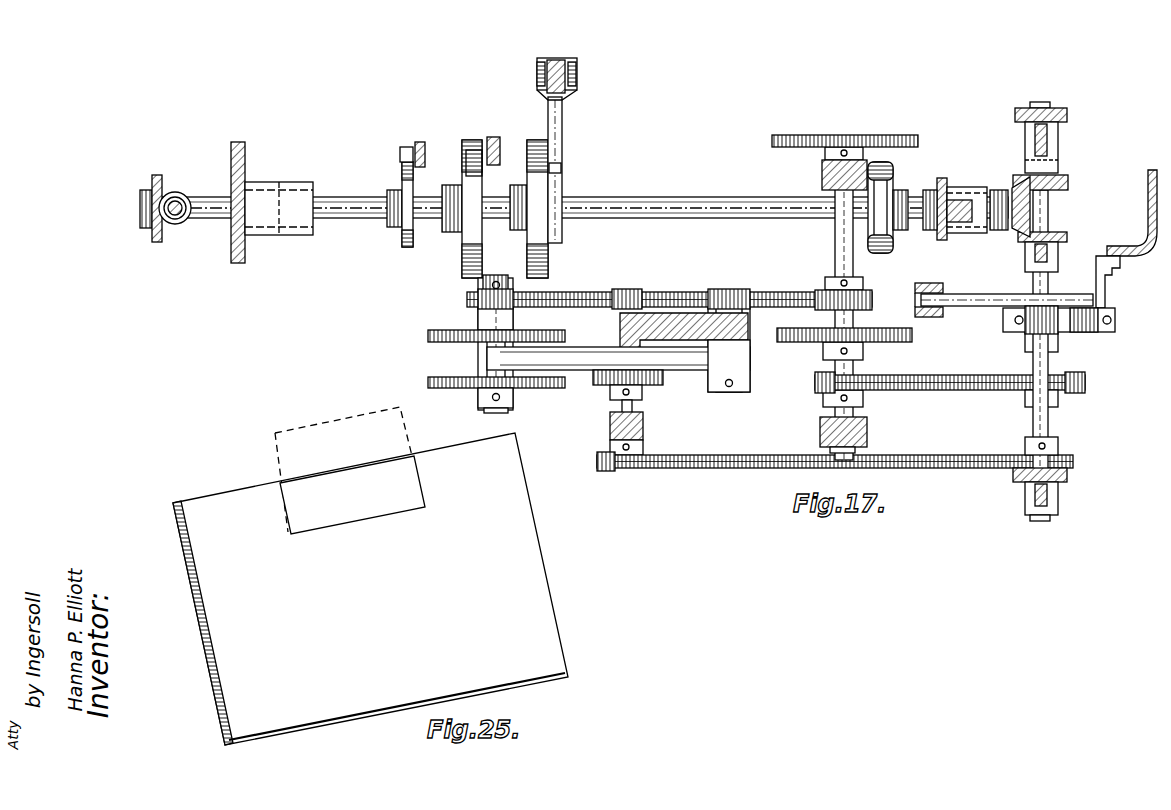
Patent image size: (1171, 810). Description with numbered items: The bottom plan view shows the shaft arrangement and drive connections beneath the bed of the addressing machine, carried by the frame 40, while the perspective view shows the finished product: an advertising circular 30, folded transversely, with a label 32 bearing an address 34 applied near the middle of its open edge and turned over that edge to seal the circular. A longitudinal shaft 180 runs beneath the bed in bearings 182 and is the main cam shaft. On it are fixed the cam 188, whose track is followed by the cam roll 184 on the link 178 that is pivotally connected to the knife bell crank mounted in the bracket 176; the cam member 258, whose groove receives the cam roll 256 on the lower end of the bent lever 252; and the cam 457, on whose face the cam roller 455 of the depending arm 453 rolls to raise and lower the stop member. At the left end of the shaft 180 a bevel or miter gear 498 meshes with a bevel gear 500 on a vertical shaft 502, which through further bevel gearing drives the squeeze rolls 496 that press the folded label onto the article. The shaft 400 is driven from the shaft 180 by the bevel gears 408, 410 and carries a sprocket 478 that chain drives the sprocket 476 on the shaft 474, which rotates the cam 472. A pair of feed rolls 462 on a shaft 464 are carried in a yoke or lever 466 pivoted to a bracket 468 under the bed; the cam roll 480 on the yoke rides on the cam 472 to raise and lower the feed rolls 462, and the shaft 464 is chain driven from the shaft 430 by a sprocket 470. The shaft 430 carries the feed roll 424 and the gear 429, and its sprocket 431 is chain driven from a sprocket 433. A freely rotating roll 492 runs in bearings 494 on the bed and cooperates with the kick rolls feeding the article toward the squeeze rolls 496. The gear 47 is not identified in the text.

In FIG. 25, the advertising circular 30 is at (535, 597).
In FIG. 25, the label 32 is at (304, 536).
In FIG. 25, the address 34 is at (368, 512).
In FIG. 17, the frame 40 is at (232, 248).
In FIG. 17, the gear 47 is at (496, 349).
In FIG. 17, the bracket 176 is at (556, 62).
In FIG. 17, the link 178 is at (563, 128).
In FIG. 17, the shaft 180 is at (344, 202).
In FIG. 17, the bearings 182 is at (270, 182).
In FIG. 17, the cam roll 184 is at (552, 168).
In FIG. 17, the cam 188 is at (530, 199).
In FIG. 17, the bent lever 252 is at (494, 137).
In FIG. 17, the cam roll 256 is at (483, 147).
In FIG. 17, the cam member 258 is at (462, 150).
In FIG. 17, the shaft 400 is at (1034, 406).
In FIG. 17, the bevel gear 408 is at (1061, 183).
In FIG. 17, the bevel gear 410 is at (1012, 192).
In FIG. 17, the feed roll 424 is at (912, 335).
In FIG. 17, the gear 429 is at (797, 135).
In FIG. 17, the shaft 430 is at (835, 246).
In FIG. 17, the sprocket 431 is at (870, 378).
In FIG. 17, the sprocket 433 is at (1002, 375).
In FIG. 17, the depending arm 453 is at (416, 146).
In FIG. 17, the cam roller 455 is at (400, 153).
In FIG. 17, the cam 457 is at (403, 233).
In FIG. 17, the feed rolls 462 is at (428, 338).
In FIG. 17, the shaft 464 is at (489, 411).
In FIG. 17, the yoke or lever 466 is at (579, 360).
In FIG. 17, the bracket 468 is at (678, 314).
In FIG. 17, the sprocket 470 is at (864, 298).
In FIG. 17, the cam 472 is at (653, 385).
In FIG. 17, the shaft 474 is at (619, 407).
In FIG. 17, the sprocket 476 is at (607, 469).
In FIG. 17, the sprocket 478 is at (1010, 469).
In FIG. 17, the cam roll 480 is at (644, 396).
In FIG. 17, the roll 492 is at (951, 285).
In FIG. 17, the bearings 494 is at (983, 296).
In FIG. 17, the squeeze rolls 496 is at (1115, 320).
In FIG. 17, the bevel gear 498 is at (155, 237).
In FIG. 17, the bevel gear 500 is at (184, 226).
In FIG. 17, the vertical shaft 502 is at (178, 201).